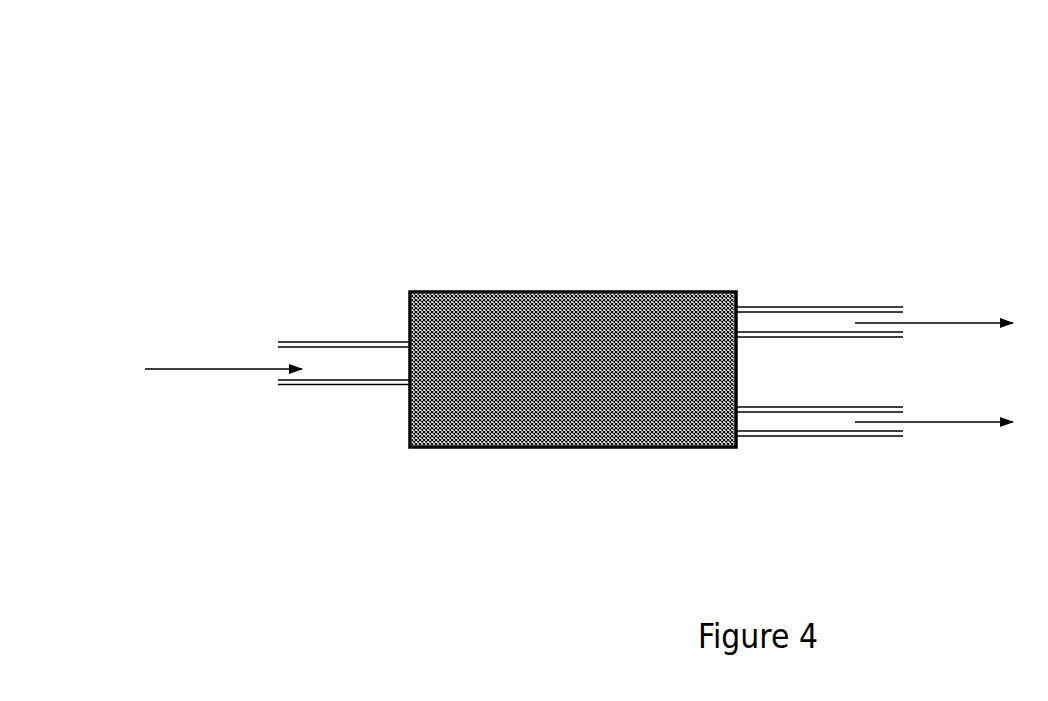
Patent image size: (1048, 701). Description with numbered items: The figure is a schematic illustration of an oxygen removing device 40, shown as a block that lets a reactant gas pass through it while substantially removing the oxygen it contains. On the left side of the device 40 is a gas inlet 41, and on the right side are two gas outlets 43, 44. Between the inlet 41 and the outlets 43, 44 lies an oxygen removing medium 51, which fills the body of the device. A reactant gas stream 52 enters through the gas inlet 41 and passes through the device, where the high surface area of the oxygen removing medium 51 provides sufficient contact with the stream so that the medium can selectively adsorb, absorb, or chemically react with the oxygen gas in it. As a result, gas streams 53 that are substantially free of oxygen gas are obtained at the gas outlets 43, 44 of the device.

The oxygen removing device 40 is at (672, 172).
The gas inlet 41 is at (338, 341).
The gas outlet 43 is at (782, 306).
The gas outlet 44 is at (797, 437).
The oxygen removing medium 51 is at (613, 400).
The reactant gas stream 52 is at (200, 351).
The gas streams 53 is at (941, 372).